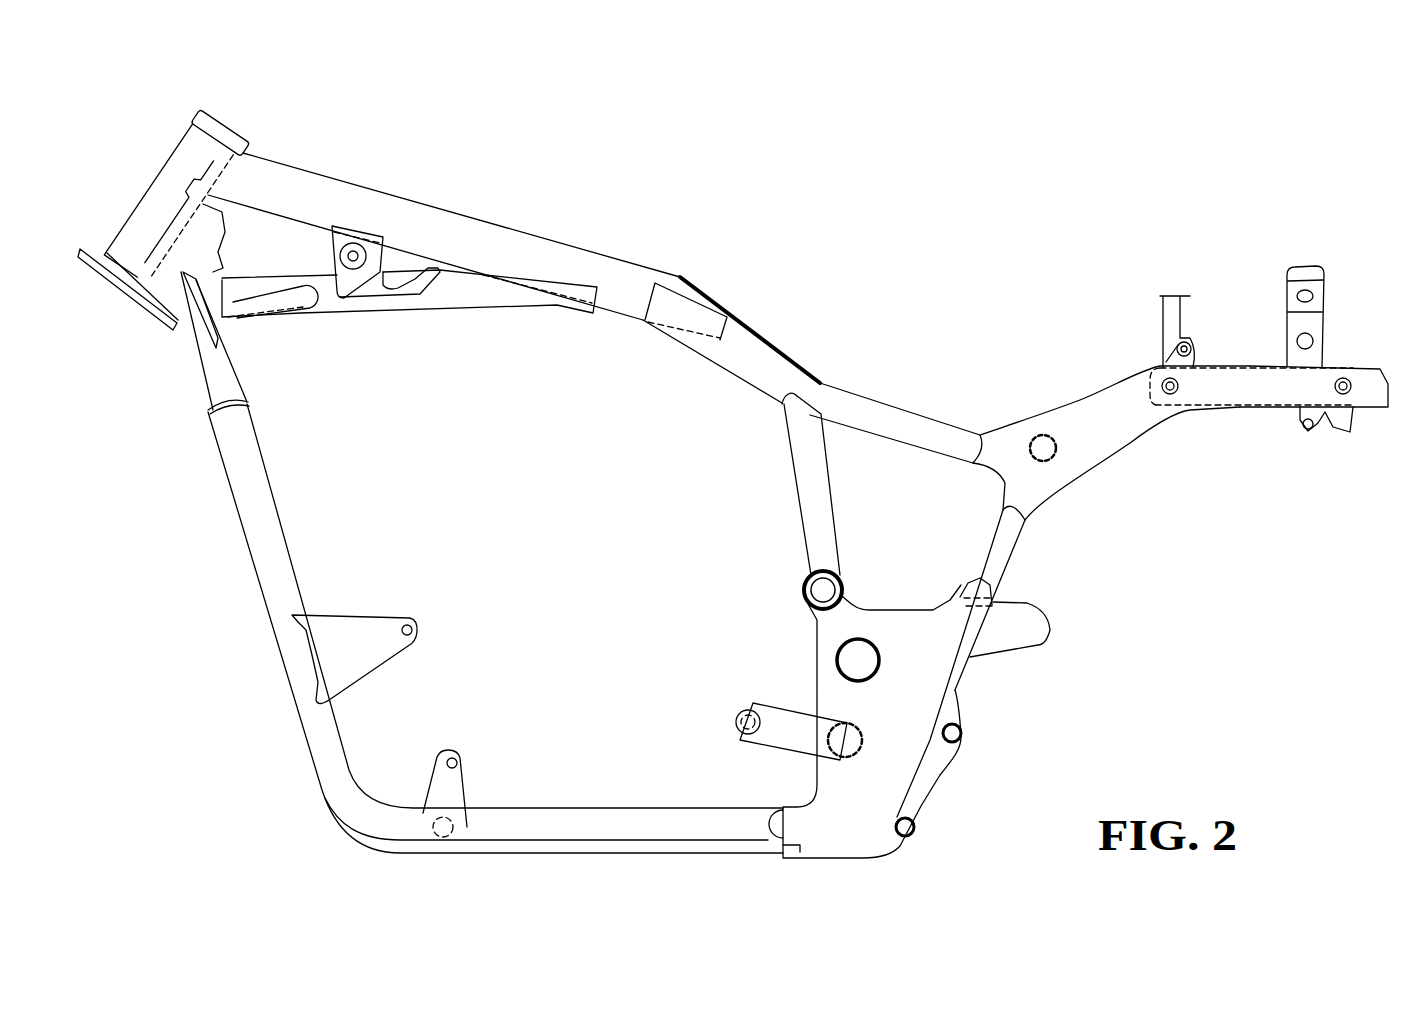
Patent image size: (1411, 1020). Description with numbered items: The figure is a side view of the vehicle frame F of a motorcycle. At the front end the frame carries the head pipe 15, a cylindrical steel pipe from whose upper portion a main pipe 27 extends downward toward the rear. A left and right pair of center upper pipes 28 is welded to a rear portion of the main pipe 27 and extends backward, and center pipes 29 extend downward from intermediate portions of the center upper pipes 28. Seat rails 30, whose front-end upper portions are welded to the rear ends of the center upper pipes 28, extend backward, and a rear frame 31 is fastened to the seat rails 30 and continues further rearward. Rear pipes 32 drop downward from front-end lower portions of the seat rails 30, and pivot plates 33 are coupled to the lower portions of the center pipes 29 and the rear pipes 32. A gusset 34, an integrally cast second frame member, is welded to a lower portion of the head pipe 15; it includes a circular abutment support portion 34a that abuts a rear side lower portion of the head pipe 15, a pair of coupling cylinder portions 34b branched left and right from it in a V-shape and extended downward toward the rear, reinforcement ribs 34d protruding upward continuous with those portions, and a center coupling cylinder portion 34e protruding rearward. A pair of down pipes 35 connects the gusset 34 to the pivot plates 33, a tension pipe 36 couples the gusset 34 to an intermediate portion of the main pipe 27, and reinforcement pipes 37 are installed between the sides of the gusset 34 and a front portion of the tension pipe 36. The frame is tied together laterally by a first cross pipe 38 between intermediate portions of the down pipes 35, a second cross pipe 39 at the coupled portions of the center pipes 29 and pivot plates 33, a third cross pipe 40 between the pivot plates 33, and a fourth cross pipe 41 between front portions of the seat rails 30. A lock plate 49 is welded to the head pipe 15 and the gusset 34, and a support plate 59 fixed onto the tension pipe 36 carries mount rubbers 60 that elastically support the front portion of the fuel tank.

The vehicle frame F is at (733, 475).
The head pipe 15 is at (176, 189).
The main pipe 27 is at (444, 233).
The center upper pipe 28 is at (812, 370).
The center pipe 29 is at (777, 484).
The seat rail 30 is at (1111, 422).
The rear frame 31 is at (1269, 375).
The rear pipe 32 is at (1002, 661).
The pivot plate 33 is at (865, 684).
The gusset 34 is at (183, 351).
The abutment support portion 34a is at (154, 206).
The coupling cylinder portion 34b is at (460, 621).
The reinforcement rib 34d is at (154, 313).
The center coupling cylinder portion 34e is at (245, 242).
The down pipe 35 is at (321, 661).
The tension pipe 36 is at (409, 328).
The reinforcement pipe 37 is at (276, 345).
The first cross pipe 38 is at (473, 789).
The second cross pipe 39 is at (778, 608).
The third cross pipe 40 is at (874, 753).
The fourth cross pipe 41 is at (1101, 486).
The lock plate 49 is at (127, 289).
The support plate 59 is at (357, 202).
The mount rubber 60 is at (360, 299).